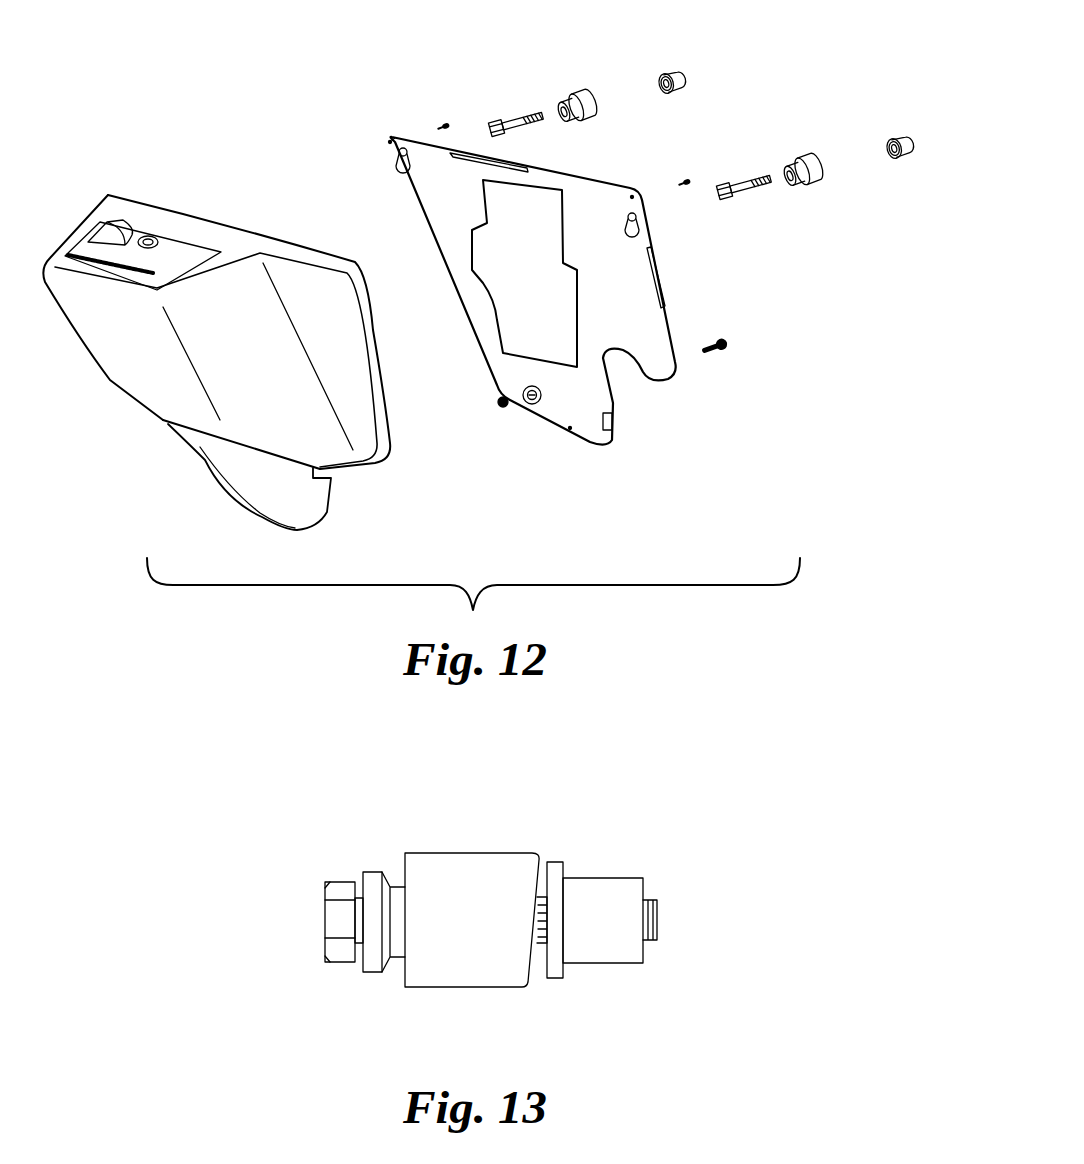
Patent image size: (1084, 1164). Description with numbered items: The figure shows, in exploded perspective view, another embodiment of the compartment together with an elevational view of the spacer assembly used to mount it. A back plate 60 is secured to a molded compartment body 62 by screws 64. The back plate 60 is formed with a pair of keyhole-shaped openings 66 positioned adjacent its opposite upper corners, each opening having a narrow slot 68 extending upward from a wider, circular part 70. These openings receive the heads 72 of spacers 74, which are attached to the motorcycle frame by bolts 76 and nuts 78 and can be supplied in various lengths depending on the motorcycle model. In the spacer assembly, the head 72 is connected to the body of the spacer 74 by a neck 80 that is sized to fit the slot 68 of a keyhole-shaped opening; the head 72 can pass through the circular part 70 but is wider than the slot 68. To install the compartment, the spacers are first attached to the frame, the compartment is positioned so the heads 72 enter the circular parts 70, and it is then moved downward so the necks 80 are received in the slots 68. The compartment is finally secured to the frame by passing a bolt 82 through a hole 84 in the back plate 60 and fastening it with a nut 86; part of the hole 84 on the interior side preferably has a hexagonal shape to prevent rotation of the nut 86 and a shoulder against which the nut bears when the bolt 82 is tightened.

In FIG. 12, the back plate 60 is at (653, 328).
In FIG. 12, the molded compartment body 62 is at (385, 447).
In FIG. 12, the screws 64 is at (442, 125).
In FIG. 12, the keyhole-shaped openings 66 is at (393, 169).
In FIG. 12, the narrow slot 68 is at (392, 150).
In FIG. 12, the circular part 70 is at (412, 168).
In FIG. 12, the head 72 is at (555, 103).
In FIG. 13, the head 72 is at (377, 872).
In FIG. 12, the spacer 74 is at (582, 95).
In FIG. 13, the spacer 74 is at (468, 862).
In FIG. 12, the bolt 76 is at (507, 113).
In FIG. 13, the bolt 76 is at (342, 957).
In FIG. 12, the nut 78 is at (685, 75).
In FIG. 13, the nut 78 is at (597, 957).
In FIG. 13, the neck 80 is at (397, 943).
In FIG. 12, the bolt 82 is at (713, 353).
In FIG. 12, the hole 84 is at (527, 402).
In FIG. 12, the nut 86 is at (498, 398).